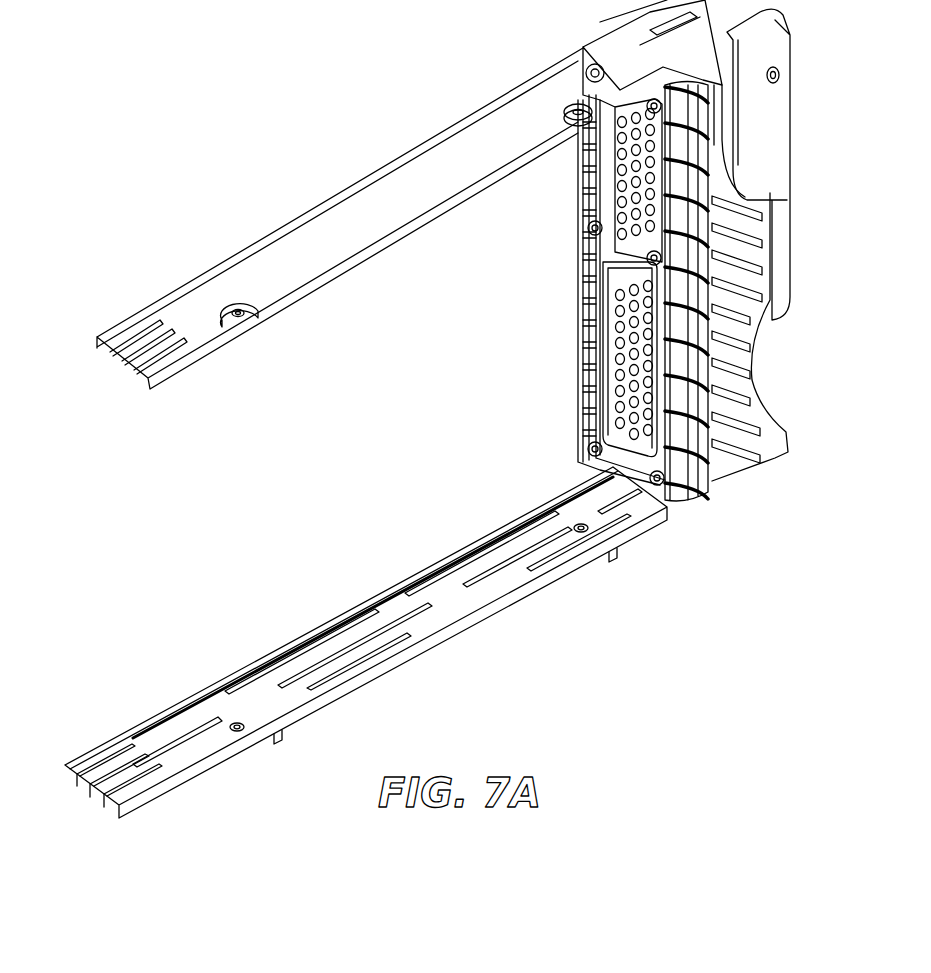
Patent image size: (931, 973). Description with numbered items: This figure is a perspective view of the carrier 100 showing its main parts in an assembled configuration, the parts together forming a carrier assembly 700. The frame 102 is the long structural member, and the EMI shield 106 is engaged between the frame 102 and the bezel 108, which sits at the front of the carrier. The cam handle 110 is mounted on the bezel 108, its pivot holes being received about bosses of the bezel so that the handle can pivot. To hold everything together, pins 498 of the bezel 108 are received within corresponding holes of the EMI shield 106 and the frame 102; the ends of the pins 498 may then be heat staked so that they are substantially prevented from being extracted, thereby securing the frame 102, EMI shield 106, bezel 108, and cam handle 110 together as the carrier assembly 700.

The carrier 100 is at (104, 72).
The carrier assembly 700 is at (229, 82).
The frame 102 is at (465, 155).
The EMI shield 106 is at (693, 510).
The bezel 108 is at (747, 395).
The cam handle 110 is at (753, 147).
The pins 498 is at (645, 114).